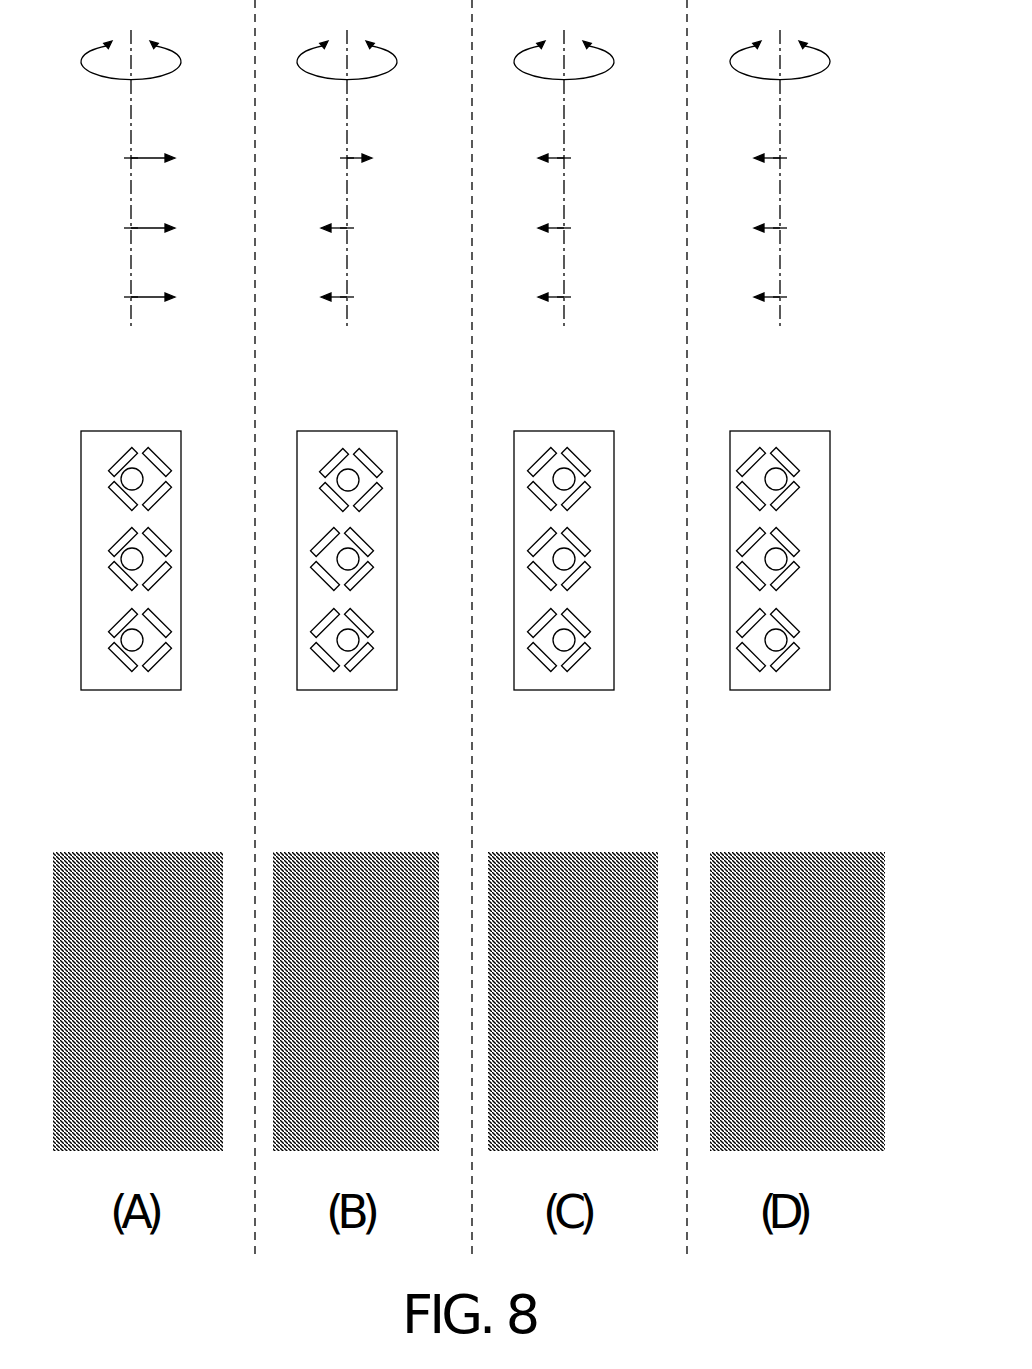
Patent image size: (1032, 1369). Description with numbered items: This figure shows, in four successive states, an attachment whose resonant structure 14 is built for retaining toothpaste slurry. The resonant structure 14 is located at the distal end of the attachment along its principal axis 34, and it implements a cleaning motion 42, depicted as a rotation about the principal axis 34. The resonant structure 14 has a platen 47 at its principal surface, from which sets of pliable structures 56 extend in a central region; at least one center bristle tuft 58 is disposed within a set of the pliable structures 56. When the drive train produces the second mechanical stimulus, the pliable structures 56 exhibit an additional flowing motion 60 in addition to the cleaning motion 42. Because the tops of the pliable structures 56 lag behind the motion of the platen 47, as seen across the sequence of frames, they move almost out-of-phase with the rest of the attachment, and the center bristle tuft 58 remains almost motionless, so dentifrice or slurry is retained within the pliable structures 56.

The resonant structure 14 is at (465, 755).
The principal axis 34 is at (458, 180).
The cleaning motion 42 is at (482, 42).
The platen 47 is at (505, 590).
The pliable structures 56 is at (501, 590).
The center bristle tuft 58 is at (507, 559).
The flowing motion 60 is at (455, 216).